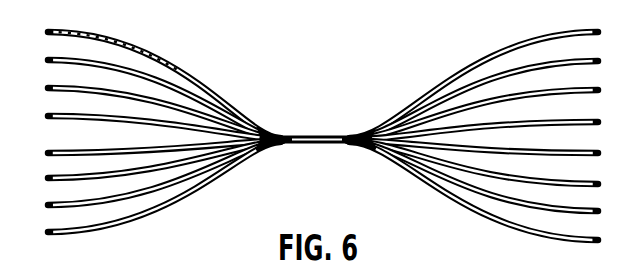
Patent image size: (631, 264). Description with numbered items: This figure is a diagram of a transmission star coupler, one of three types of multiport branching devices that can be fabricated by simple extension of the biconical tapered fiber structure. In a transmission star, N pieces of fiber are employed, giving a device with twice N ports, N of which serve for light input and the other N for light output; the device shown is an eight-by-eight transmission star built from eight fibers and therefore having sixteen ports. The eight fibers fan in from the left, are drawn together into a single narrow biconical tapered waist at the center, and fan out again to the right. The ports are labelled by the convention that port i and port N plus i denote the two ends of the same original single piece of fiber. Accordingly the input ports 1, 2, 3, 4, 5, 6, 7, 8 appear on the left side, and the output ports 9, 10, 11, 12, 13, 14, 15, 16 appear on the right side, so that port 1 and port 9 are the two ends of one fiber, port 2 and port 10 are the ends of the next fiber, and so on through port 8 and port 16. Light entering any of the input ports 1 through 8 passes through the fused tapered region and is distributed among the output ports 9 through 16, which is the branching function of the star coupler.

The port 1 is at (154, 80).
The port 2 is at (154, 94).
The port 3 is at (155, 109).
The port 4 is at (155, 123).
The port 5 is at (155, 152).
The port 6 is at (155, 165).
The port 7 is at (154, 179).
The port 8 is at (154, 192).
The port 9 is at (487, 80).
The port 10 is at (490, 95).
The port 11 is at (489, 110).
The port 12 is at (489, 126).
The port 13 is at (489, 152).
The port 14 is at (489, 168).
The port 15 is at (490, 182).
The port 16 is at (490, 196).